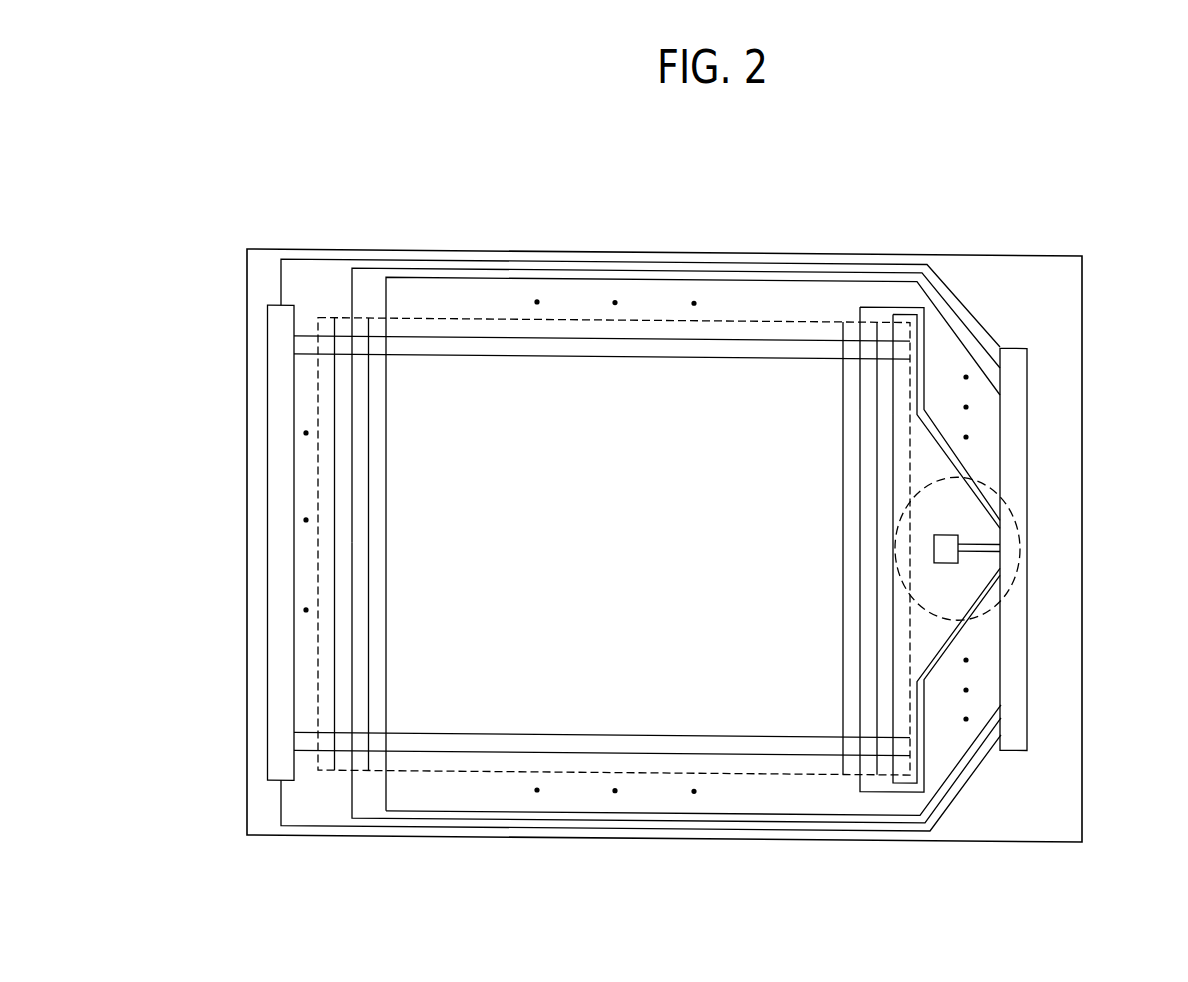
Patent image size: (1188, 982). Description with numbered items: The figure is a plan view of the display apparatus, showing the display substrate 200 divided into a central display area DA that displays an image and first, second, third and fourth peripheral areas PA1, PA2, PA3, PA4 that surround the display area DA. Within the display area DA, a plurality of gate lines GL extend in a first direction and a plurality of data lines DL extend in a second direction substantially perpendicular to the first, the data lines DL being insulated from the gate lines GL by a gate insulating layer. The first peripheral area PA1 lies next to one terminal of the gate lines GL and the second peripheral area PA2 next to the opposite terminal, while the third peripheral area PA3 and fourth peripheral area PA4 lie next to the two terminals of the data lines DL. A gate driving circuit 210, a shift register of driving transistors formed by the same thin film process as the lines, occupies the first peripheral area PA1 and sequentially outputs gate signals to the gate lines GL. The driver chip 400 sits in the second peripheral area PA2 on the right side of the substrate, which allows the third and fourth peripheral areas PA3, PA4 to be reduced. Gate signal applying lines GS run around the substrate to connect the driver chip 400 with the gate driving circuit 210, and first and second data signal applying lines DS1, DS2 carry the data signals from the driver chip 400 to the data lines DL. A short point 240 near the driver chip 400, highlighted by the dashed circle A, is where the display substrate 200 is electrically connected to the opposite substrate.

The display substrate 200 is at (1082, 401).
The gate driving circuit 210 is at (272, 400).
The short point 240 is at (1000, 532).
The driver chip 400 is at (1018, 626).
The gate signal applying lines GS is at (329, 258).
The first data signal applying lines DS1 is at (819, 266).
The second data signal applying lines DS2 is at (781, 819).
The display area DA is at (462, 388).
The data lines DL is at (387, 544).
The gate lines GL is at (676, 354).
The first peripheral area PA1 is at (258, 530).
The second peripheral area PA2 is at (1055, 446).
The third peripheral area PA3 is at (750, 303).
The fourth peripheral area PA4 is at (507, 780).
The region A is at (1000, 544).